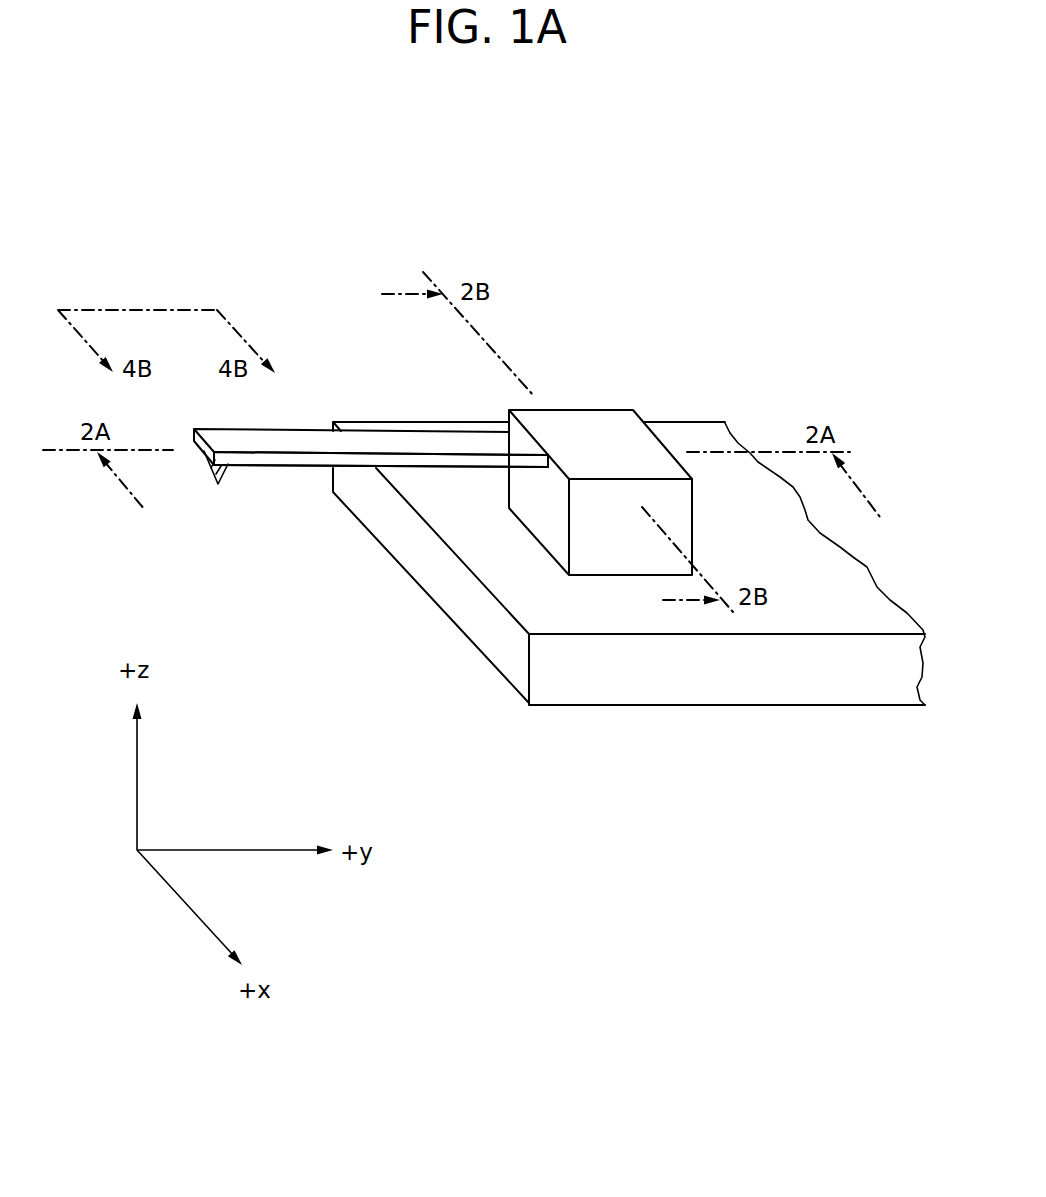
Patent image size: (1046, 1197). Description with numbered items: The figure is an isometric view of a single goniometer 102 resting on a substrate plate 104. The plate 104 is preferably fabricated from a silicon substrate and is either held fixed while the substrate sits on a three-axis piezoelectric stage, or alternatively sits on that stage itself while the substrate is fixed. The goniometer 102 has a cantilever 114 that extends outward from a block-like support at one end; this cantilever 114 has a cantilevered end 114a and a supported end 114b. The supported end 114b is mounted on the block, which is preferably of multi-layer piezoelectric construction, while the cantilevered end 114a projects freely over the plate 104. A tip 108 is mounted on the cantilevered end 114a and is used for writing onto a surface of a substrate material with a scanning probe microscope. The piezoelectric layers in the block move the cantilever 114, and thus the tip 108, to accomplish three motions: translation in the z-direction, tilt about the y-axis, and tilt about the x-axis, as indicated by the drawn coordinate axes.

The goniometer 102 is at (422, 438).
The substrate plate 104 is at (539, 603).
The tip 108 is at (216, 484).
The cantilever 114 is at (320, 442).
The cantilevered end 114a is at (225, 440).
The supported end 114b is at (525, 442).